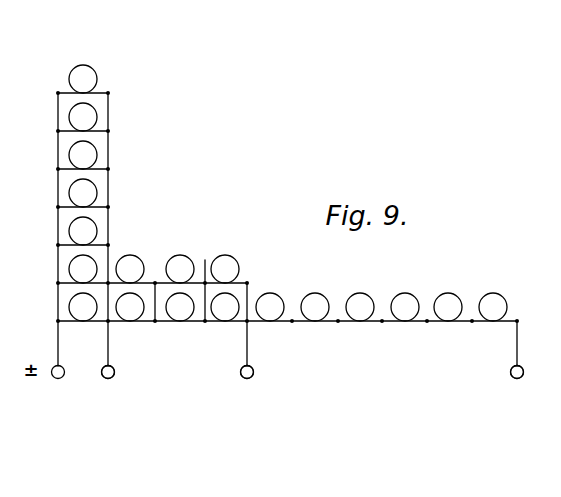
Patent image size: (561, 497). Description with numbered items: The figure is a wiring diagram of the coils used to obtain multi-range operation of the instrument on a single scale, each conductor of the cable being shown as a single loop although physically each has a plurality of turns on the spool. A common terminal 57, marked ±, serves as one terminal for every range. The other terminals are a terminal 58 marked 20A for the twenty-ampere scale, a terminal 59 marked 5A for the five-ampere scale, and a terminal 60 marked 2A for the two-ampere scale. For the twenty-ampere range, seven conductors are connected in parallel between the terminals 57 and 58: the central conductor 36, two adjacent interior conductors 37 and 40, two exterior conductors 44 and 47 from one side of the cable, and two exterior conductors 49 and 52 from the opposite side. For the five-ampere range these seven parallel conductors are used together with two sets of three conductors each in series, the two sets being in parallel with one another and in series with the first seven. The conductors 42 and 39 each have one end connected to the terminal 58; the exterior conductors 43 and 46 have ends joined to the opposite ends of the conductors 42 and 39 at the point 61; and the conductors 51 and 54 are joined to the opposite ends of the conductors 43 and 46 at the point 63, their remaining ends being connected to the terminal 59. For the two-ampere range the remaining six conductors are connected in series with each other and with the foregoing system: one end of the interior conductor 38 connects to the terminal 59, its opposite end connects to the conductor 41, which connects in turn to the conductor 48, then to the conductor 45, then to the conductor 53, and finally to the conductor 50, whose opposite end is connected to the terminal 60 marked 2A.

The central conductor 36 is at (96, 88).
The interior conductor 37 is at (96, 127).
The interior conductor 40 is at (96, 165).
The exterior conductor 44 is at (96, 203).
The exterior conductor 47 is at (96, 241).
The exterior conductor 49 is at (97, 276).
The exterior conductor 52 is at (69, 306).
The conductor 42 is at (142, 275).
The exterior conductor 43 is at (192, 274).
The conductor 51 is at (239, 267).
The junction point 63 is at (212, 260).
The conductor 39 is at (135, 321).
The exterior conductor 46 is at (181, 321).
The conductor 54 is at (226, 321).
The interior conductor 38 is at (280, 297).
The conductor 41 is at (325, 297).
The conductor 48 is at (370, 297).
The conductor 45 is at (415, 297).
The conductor 53 is at (458, 297).
The conductor 50 is at (503, 297).
The junction point 61 is at (157, 323).
The common terminal 57 is at (53, 378).
The twenty-ampere terminal 58 is at (102, 378).
The five-ampere terminal 59 is at (240, 374).
The two-ampere terminal 60 is at (510, 373).
The twenty-ampere scale marking 20A is at (108, 381).
The five-ampere scale marking 5A is at (249, 382).
The two-ampere scale marking 2A is at (519, 383).